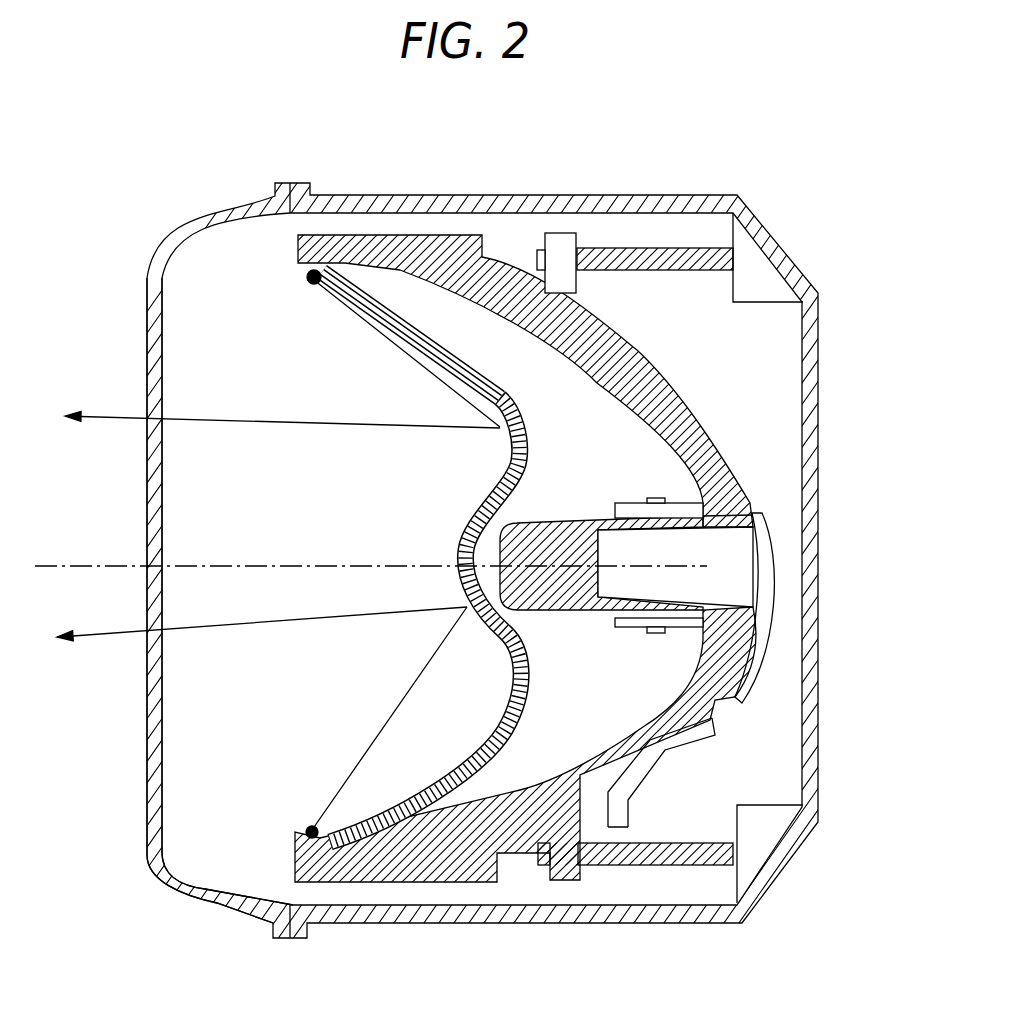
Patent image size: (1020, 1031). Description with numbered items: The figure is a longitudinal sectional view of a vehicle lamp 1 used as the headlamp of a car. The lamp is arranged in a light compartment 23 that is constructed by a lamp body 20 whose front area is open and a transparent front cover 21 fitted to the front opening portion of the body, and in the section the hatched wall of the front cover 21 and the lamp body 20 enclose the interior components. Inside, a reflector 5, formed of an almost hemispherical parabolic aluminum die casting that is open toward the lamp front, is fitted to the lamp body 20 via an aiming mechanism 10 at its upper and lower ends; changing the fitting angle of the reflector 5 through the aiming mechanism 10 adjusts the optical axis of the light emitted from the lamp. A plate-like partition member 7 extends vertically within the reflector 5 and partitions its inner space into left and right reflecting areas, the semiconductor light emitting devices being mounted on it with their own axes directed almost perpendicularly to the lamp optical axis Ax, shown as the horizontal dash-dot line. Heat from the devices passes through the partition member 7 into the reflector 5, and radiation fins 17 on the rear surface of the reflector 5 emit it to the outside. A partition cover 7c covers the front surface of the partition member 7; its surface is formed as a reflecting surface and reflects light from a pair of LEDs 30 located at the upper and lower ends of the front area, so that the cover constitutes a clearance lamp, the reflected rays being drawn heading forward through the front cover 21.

The vehicle lamp 1 is at (246, 284).
The reflector 5 is at (708, 375).
The plate-like partition member 7 is at (548, 517).
The partition cover 7c is at (440, 366).
The aiming mechanism 10 is at (655, 238).
The radiation fins 17 is at (760, 627).
The lamp body 20 is at (819, 430).
The front cover 21 is at (147, 333).
The light compartment 23 is at (218, 874).
The LED 30 is at (308, 288).
The lamp optical axis Ax is at (187, 565).